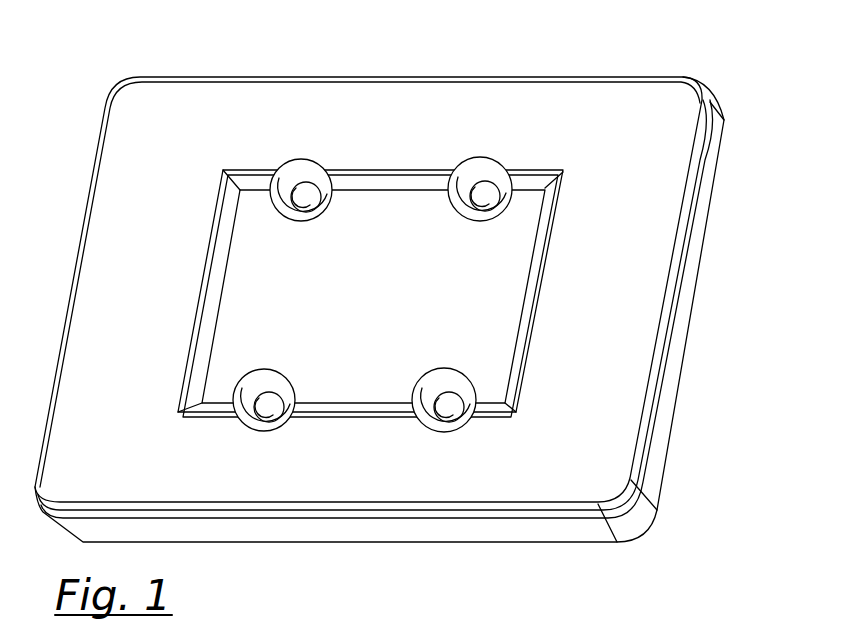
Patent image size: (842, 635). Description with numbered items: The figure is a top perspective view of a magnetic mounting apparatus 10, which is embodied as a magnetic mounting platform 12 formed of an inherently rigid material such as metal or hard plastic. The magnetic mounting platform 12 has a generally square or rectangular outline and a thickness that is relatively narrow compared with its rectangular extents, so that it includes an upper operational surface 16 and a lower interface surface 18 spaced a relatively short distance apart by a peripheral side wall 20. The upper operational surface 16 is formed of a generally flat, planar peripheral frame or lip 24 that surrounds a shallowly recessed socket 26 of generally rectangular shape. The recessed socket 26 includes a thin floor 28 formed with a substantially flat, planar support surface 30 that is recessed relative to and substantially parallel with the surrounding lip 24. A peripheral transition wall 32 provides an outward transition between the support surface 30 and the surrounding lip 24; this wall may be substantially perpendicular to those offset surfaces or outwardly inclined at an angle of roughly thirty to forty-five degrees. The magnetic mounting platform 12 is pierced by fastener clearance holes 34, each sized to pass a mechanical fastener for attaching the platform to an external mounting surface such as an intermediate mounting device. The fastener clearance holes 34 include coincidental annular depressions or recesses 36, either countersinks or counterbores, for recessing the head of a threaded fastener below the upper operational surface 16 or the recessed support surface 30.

The magnetic mounting apparatus 10 is at (701, 58).
The magnetic mounting platform 12 is at (723, 118).
The upper operational surface 16 is at (642, 325).
The lower interface surface 18 is at (560, 553).
The peripheral side wall 20 is at (705, 203).
The peripheral frame or lip 24 is at (185, 140).
The recessed socket 26 is at (389, 159).
The floor 28 is at (357, 303).
The support surface 30 is at (473, 295).
The peripheral transition wall 32 is at (217, 247).
The fastener clearance holes 34 is at (315, 207).
The annular depressions or recesses 36 is at (307, 157).